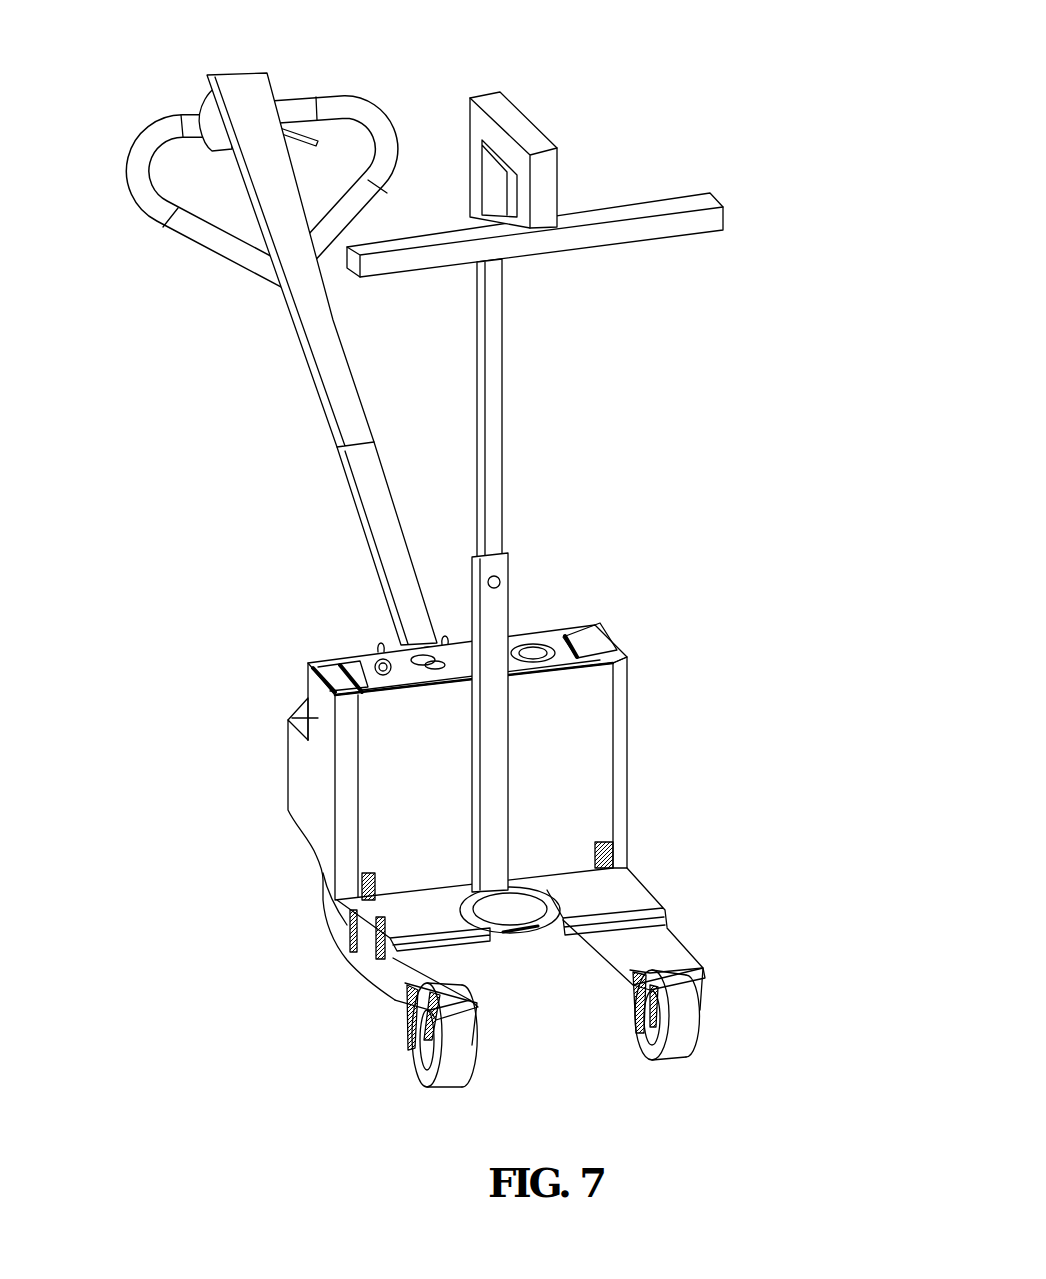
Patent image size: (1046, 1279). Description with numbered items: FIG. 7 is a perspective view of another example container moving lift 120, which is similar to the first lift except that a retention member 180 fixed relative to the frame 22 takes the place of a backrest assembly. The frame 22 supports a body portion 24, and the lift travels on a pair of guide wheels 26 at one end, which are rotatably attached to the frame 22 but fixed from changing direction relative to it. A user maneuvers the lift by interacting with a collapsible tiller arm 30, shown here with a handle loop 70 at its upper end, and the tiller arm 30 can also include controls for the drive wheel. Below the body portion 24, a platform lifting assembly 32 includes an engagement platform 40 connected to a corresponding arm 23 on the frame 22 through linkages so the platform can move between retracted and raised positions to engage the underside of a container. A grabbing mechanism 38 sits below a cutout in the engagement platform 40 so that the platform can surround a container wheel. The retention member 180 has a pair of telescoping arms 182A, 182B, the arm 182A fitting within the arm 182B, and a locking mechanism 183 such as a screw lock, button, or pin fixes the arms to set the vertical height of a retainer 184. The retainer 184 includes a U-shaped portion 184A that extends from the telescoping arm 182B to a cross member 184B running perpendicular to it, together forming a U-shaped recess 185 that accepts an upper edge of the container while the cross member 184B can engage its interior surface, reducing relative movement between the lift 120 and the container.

The handle loop 70 is at (353, 100).
The collapsible tiller arm 30 is at (337, 382).
The body portion 24 is at (318, 718).
The lift 120 is at (468, 581).
The platform lifting assembly 32 is at (527, 931).
The frame 22 is at (353, 977).
The arm 23 is at (613, 980).
The grabbing mechanism 38 is at (525, 943).
The engagement platform 40 is at (610, 893).
The guide wheels 26 is at (415, 1080).
The retention member 180 is at (556, 463).
The telescoping arm 182A is at (557, 704).
The telescoping arm 182B is at (498, 398).
The locking mechanism 183 is at (501, 582).
The retainer 184 is at (556, 169).
The U-shaped portion 184A is at (504, 131).
The cross member 184B is at (662, 233).
The U-shaped recess 185 is at (495, 197).